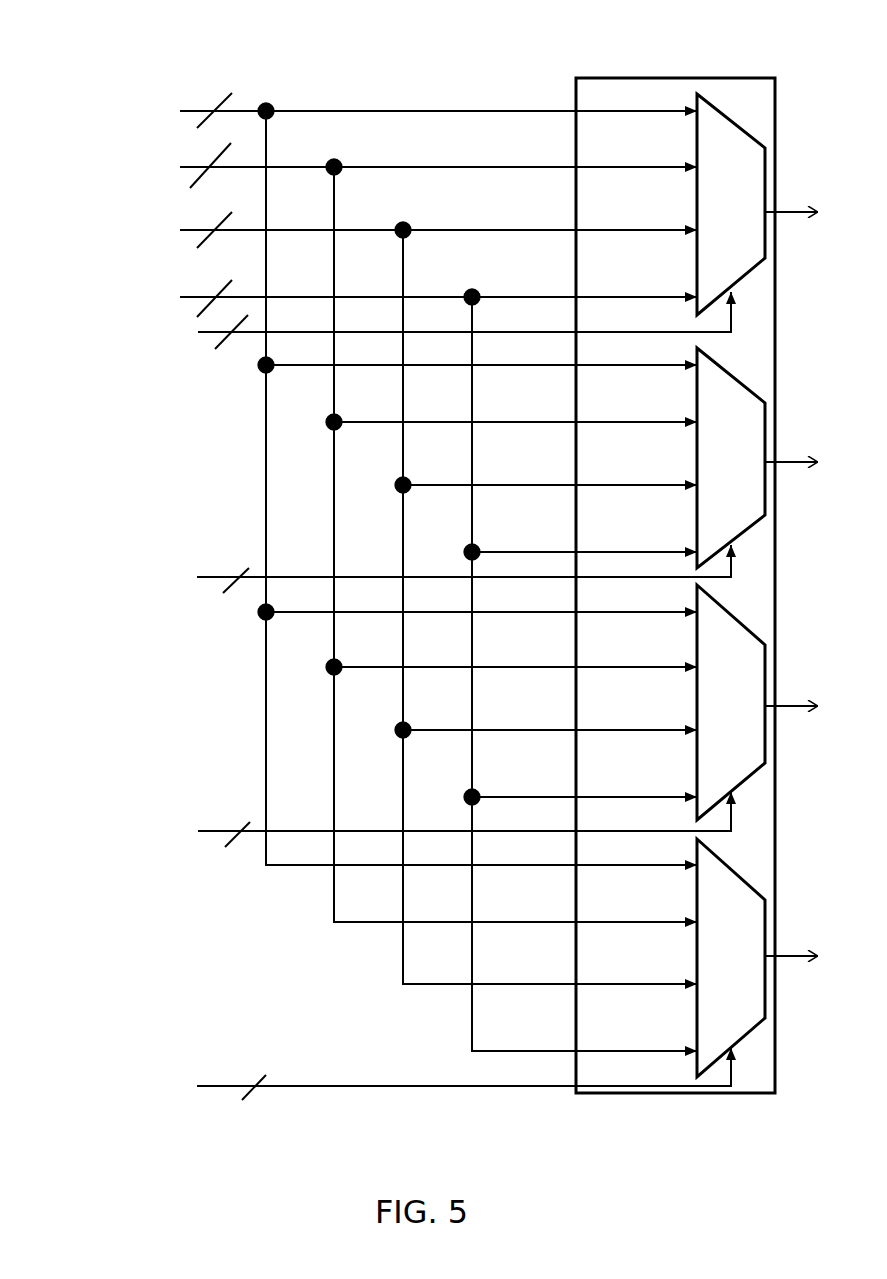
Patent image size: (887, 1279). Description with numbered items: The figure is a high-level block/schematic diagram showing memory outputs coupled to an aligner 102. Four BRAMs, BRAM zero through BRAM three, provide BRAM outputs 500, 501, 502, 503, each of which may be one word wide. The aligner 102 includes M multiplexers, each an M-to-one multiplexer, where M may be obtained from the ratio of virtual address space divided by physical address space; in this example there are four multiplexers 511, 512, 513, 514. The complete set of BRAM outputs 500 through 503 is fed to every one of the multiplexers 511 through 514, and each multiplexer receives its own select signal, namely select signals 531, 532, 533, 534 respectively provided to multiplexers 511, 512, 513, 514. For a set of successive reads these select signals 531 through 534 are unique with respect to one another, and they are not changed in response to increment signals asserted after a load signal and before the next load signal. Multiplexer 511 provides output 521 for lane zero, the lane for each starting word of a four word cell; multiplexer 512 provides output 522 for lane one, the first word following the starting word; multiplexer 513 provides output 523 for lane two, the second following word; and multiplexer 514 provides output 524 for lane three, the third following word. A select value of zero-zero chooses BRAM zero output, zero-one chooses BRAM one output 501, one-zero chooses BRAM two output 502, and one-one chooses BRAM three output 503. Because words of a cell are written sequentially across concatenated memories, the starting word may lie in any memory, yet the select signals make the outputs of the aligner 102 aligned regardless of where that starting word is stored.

The aligner 102 is at (588, 77).
The BRAM 0 output 500 is at (183, 113).
The BRAM 1 output 501 is at (182, 167).
The BRAM 2 output 502 is at (183, 232).
The BRAM 3 output 503 is at (183, 299).
The multiplexer 511 is at (752, 214).
The multiplexer 512 is at (752, 466).
The multiplexer 513 is at (752, 710).
The multiplexer 514 is at (752, 961).
The output 521 is at (781, 212).
The output 522 is at (781, 462).
The output 523 is at (781, 706).
The output 524 is at (781, 956).
The select signal 531 is at (198, 332).
The select signal 532 is at (215, 578).
The select signal 533 is at (212, 831).
The select signal 534 is at (215, 1086).